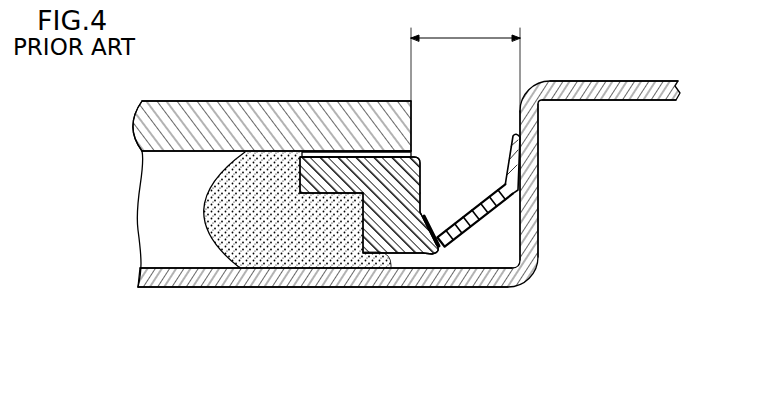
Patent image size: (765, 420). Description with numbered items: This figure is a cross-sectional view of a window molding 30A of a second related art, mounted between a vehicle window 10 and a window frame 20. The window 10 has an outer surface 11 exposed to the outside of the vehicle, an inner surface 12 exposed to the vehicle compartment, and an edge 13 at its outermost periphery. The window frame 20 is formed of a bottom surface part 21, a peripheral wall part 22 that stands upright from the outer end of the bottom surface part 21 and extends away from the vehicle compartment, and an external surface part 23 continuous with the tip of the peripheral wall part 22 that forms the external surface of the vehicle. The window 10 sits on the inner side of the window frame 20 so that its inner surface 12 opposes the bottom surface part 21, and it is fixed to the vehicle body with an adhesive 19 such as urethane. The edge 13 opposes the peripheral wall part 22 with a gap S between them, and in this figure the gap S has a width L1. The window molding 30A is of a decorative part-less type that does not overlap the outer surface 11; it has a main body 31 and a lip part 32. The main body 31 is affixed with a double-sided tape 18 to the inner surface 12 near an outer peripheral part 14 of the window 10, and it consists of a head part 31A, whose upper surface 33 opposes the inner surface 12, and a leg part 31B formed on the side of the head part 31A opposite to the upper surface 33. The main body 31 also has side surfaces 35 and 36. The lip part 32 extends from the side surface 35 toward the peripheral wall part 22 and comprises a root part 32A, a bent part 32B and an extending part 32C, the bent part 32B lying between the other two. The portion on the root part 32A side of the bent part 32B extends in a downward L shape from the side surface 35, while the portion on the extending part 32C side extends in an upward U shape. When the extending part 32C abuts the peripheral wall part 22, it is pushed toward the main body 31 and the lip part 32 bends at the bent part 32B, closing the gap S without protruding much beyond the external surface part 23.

The window 10 is at (256, 109).
The outer surface 11 is at (157, 101).
The inner surface 12 is at (148, 152).
The edge 13 is at (412, 127).
The outer peripheral part 14 is at (388, 154).
The double-sided tape 18 is at (355, 157).
The adhesive 19 is at (203, 211).
The window frame 20 is at (419, 182).
The bottom surface part 21 is at (195, 277).
The peripheral wall part 22 is at (539, 197).
The external surface part 23 is at (615, 81).
The window molding 30A is at (428, 264).
The main body 31 is at (369, 261).
The head part 31A is at (357, 180).
The leg part 31B is at (398, 216).
The lip part 32 is at (488, 250).
The root part 32A is at (425, 237).
The bent part 32B is at (478, 214).
The extending part 32C is at (487, 207).
The upper surface 33 is at (336, 158).
The side surface 35 is at (424, 190).
The side surface 36 is at (297, 184).
The width L1 is at (466, 36).
The gap S is at (457, 135).